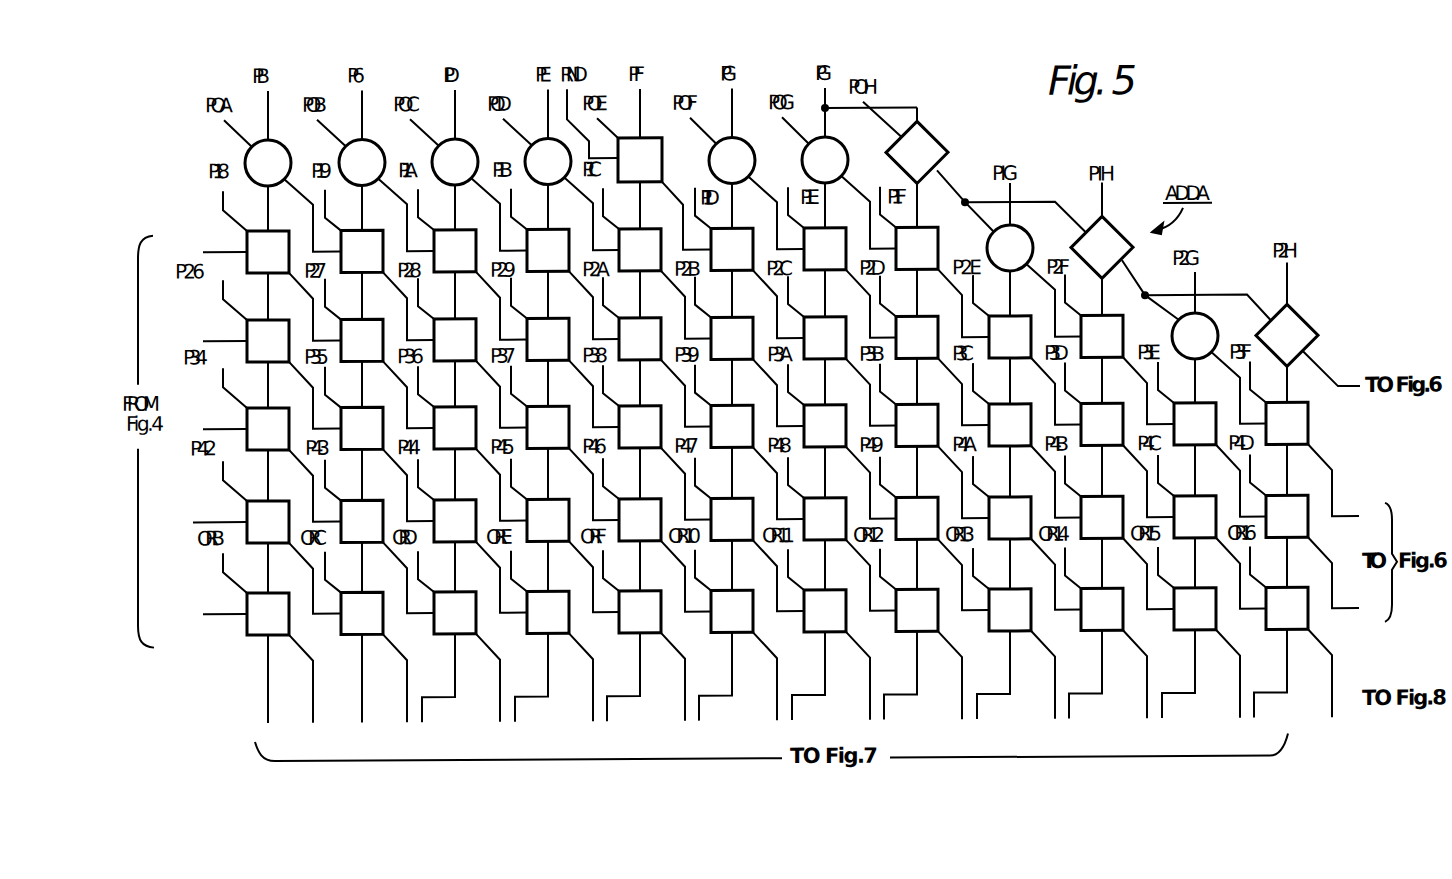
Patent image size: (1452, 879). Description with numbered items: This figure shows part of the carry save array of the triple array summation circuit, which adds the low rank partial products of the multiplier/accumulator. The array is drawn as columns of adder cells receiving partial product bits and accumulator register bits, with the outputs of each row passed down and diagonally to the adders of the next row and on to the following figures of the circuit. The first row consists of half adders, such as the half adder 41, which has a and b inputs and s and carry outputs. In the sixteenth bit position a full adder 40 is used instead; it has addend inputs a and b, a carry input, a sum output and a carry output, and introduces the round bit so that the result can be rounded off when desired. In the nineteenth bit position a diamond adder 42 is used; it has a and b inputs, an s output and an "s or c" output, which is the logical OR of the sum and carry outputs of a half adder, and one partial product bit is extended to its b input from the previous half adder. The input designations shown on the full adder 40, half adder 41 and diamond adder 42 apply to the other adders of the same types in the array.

The full adder 40 is at (668, 117).
The half adder 41 is at (757, 117).
The diamond adder 42 is at (962, 119).